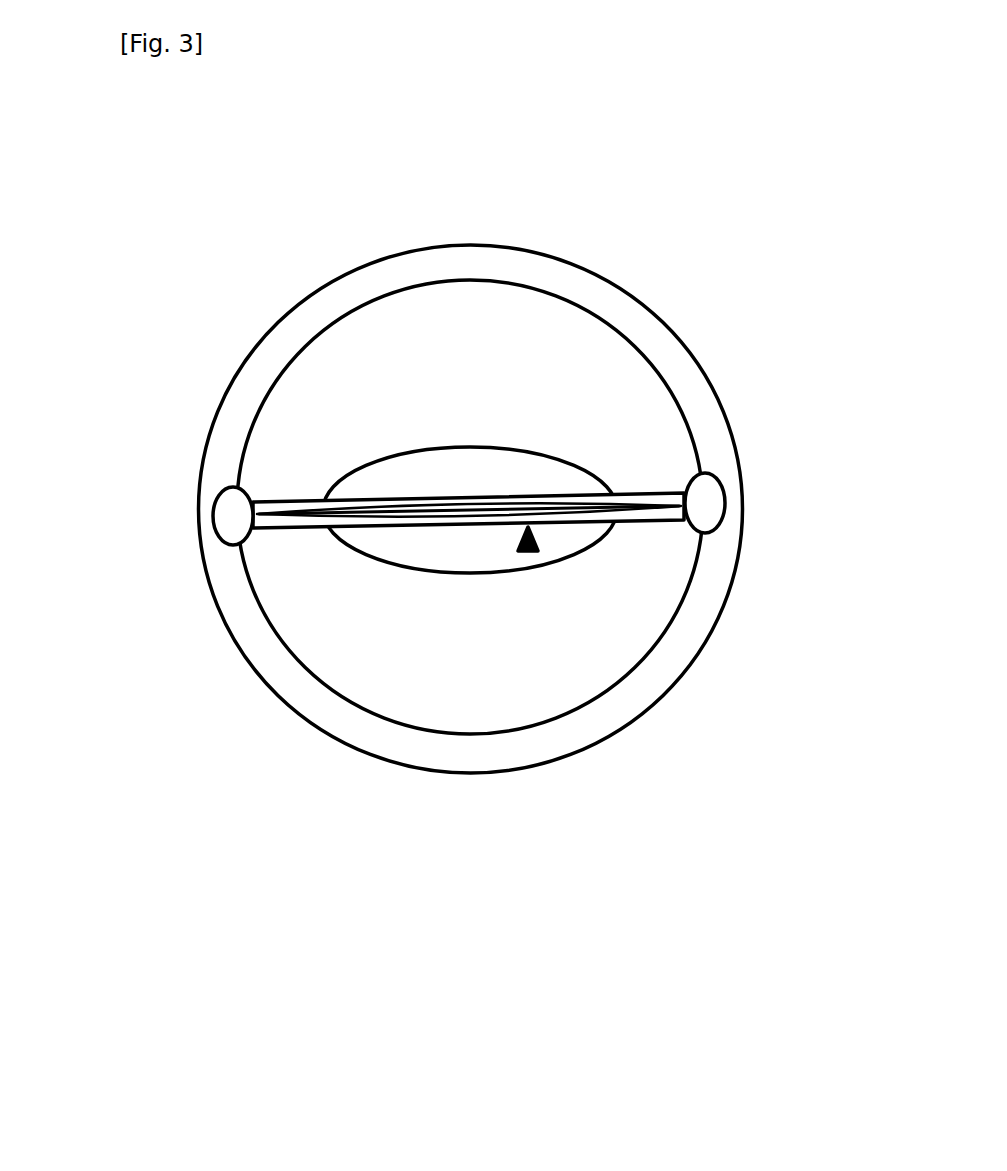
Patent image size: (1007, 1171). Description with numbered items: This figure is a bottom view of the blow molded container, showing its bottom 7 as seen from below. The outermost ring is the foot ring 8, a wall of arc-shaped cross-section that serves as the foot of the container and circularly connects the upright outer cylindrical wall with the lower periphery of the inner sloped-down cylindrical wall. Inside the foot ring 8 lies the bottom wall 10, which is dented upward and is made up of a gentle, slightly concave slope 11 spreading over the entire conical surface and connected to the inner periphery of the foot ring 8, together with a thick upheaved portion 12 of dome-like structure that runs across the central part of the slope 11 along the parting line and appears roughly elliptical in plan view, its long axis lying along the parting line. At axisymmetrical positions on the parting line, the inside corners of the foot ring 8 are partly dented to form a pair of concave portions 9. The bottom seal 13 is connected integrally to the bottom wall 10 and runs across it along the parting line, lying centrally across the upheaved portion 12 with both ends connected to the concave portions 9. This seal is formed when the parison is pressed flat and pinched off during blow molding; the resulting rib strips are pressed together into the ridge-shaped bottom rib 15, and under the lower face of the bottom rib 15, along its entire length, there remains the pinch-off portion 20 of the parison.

The bottom 7 is at (683, 283).
The foot ring 8 is at (381, 715).
The concave portions 9 is at (215, 516).
The bottom wall 10 is at (598, 637).
The slope 11 is at (530, 335).
The upheaved portion 12 is at (397, 555).
The bottom seal 13 is at (527, 550).
The bottom rib 15 is at (470, 528).
The pinch-off portion 20 is at (413, 504).